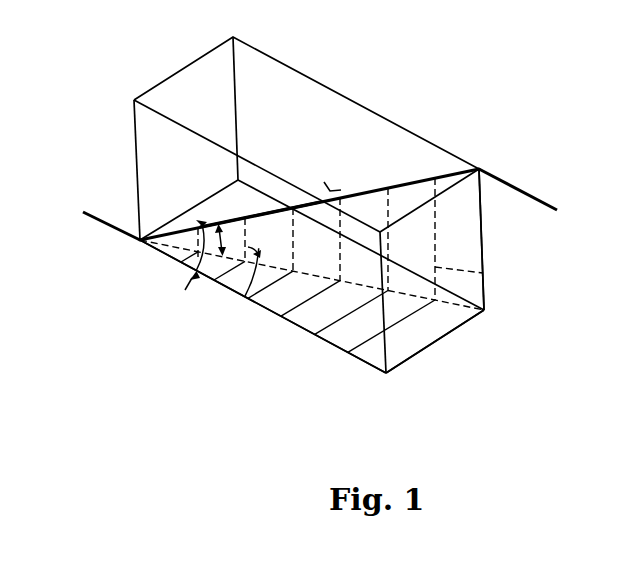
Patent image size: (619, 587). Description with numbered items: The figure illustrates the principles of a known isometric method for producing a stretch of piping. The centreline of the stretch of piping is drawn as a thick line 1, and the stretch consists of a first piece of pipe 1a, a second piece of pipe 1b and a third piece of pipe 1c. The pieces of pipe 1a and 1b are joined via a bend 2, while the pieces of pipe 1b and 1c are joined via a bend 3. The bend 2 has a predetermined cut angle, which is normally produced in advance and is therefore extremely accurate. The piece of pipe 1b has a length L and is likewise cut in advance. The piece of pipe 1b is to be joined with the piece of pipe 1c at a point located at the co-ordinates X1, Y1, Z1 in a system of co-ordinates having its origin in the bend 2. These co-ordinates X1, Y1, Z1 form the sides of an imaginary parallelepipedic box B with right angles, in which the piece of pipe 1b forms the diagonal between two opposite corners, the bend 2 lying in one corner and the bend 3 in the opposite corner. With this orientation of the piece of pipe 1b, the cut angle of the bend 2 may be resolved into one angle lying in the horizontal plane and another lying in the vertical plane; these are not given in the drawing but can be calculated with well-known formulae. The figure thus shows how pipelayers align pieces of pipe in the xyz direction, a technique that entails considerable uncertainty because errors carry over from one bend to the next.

The centreline of the stretch of piping 1 is at (402, 184).
The first piece of pipe 1a is at (93, 212).
The second piece of pipe 1b is at (260, 215).
The third piece of pipe 1c is at (533, 197).
The bend 2 is at (140, 238).
The bend 3 is at (479, 169).
The imaginary parallelepipedic box B is at (345, 97).
The length L is at (332, 186).
The x co-ordinate X1 is at (435, 341).
The y co-ordinate Y1 is at (263, 306).
The z co-ordinate Z1 is at (494, 239).